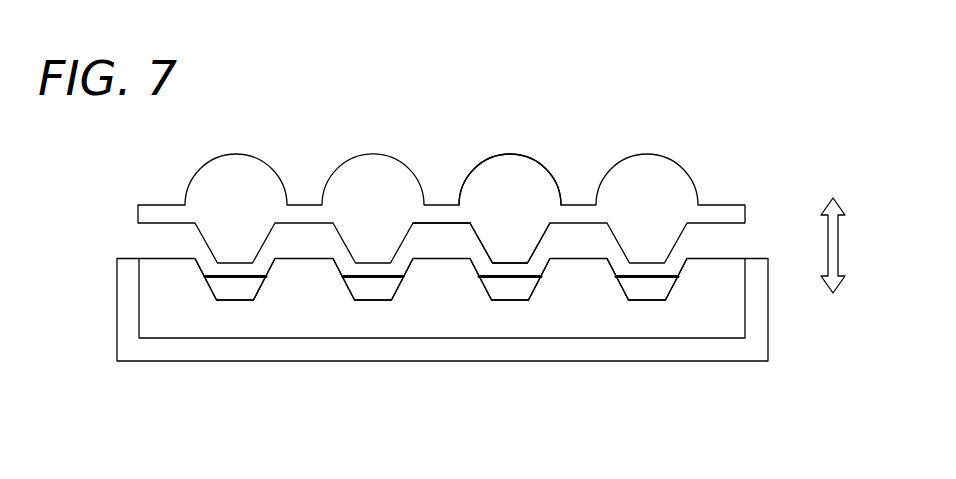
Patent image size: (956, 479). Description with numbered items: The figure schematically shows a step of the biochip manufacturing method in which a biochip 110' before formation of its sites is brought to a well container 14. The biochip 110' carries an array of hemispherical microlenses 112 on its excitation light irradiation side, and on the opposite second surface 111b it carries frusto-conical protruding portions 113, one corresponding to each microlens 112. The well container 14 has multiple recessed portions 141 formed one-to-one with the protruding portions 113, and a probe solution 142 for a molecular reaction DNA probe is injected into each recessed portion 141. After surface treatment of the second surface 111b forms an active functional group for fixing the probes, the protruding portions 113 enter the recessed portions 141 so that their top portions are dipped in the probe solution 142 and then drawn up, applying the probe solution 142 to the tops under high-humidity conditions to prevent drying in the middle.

The biochip before formation of sites 110' is at (484, 203).
The second surface 111b is at (453, 223).
The microlens 112 is at (524, 152).
The protruding portion 113 is at (547, 240).
The well container 14 is at (768, 328).
The recessed portion 141 is at (535, 290).
The probe solution 142 is at (243, 287).